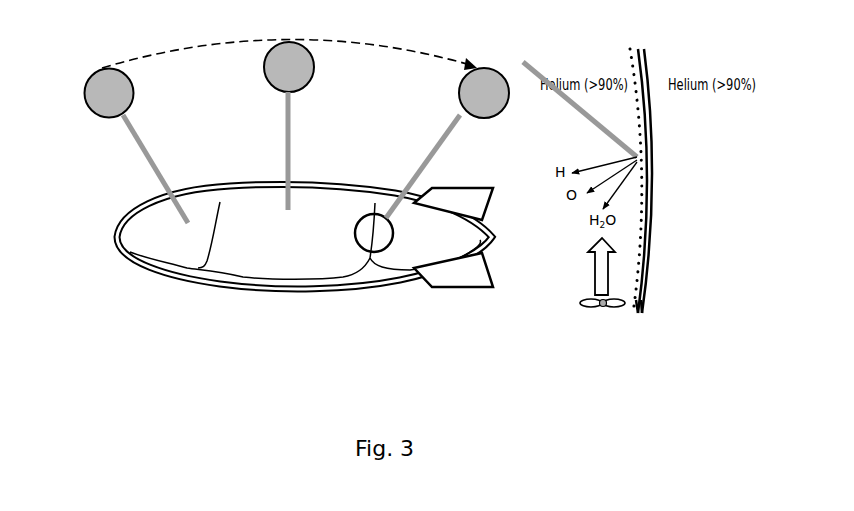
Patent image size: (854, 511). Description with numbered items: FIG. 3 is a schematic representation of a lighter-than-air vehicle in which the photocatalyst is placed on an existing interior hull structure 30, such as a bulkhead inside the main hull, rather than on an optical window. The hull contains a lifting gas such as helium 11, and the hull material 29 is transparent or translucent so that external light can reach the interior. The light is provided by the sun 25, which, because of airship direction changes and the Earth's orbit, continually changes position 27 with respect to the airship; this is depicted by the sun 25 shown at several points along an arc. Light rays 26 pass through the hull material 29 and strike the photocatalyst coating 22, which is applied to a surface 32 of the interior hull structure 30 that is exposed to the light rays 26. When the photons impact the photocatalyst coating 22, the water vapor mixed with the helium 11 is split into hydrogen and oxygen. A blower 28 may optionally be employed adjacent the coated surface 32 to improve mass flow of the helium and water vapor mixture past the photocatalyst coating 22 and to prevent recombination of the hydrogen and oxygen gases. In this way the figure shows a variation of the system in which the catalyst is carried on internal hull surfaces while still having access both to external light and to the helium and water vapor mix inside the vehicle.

The helium 11 is at (305, 238).
The photocatalyst coating 22 is at (637, 195).
The sun 25 is at (118, 87).
The light rays 26 is at (593, 122).
The changing position of the sun 27 is at (376, 44).
The blower 28 is at (619, 295).
The transparent or translucent hull material 29 is at (354, 184).
The interior hull structure 30 is at (652, 122).
The surface 32 is at (630, 312).